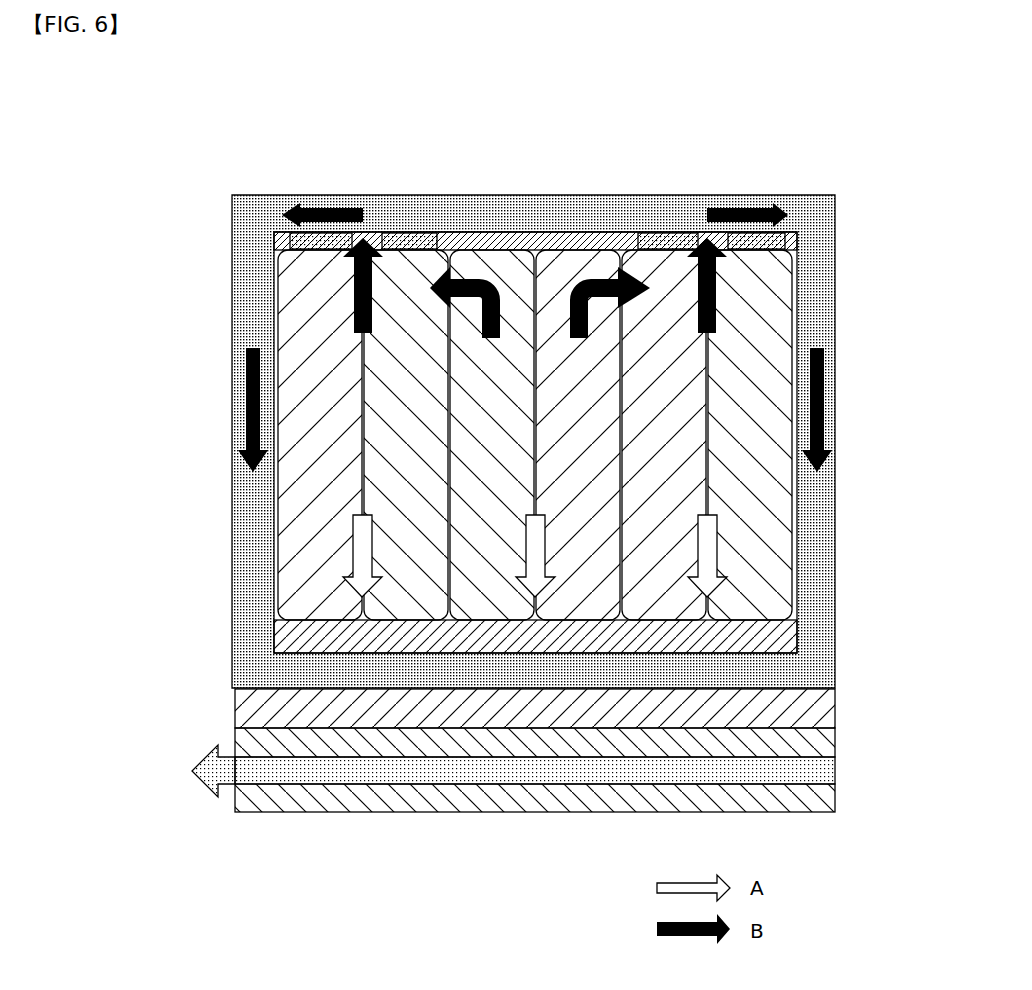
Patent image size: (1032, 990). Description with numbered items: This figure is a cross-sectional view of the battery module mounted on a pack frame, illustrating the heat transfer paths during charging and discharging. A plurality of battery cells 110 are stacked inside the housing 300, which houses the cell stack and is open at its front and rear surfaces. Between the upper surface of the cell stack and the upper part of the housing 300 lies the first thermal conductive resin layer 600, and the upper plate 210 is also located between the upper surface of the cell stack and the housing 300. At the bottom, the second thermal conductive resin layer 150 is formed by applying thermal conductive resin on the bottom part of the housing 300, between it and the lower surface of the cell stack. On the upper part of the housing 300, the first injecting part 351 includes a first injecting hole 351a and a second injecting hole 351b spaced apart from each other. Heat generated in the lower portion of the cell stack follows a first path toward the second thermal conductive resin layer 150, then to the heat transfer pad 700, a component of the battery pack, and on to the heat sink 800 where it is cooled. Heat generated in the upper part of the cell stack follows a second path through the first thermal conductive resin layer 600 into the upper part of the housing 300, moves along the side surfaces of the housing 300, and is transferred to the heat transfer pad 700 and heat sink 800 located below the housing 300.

The battery cell 110 is at (318, 543).
The second thermal conductive resin layer 150 is at (292, 634).
The upper plate 210 is at (785, 240).
The housing 300 is at (257, 585).
The first injecting part 351 is at (717, 90).
The first injecting hole 351a is at (405, 195).
The second injecting hole 351b is at (752, 195).
The first thermal conductive resin layer 600 is at (420, 235).
The heat transfer pad 700 is at (258, 705).
The heat sink 800 is at (365, 800).